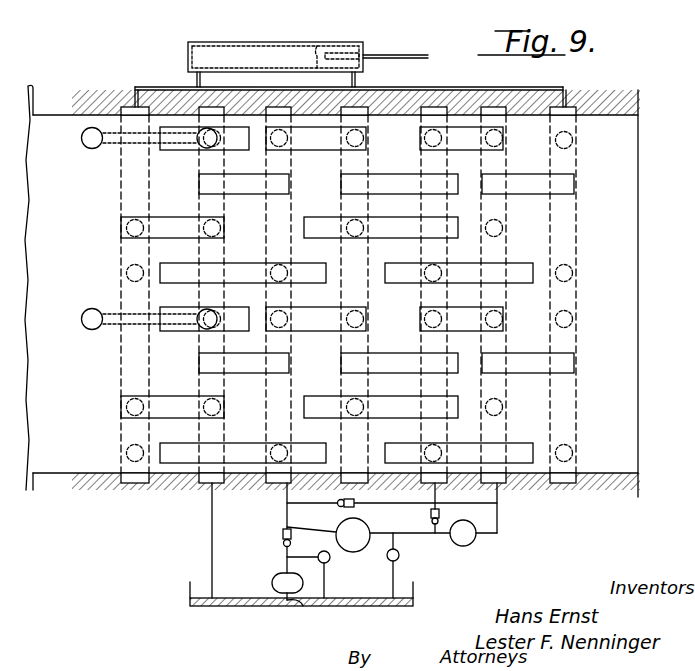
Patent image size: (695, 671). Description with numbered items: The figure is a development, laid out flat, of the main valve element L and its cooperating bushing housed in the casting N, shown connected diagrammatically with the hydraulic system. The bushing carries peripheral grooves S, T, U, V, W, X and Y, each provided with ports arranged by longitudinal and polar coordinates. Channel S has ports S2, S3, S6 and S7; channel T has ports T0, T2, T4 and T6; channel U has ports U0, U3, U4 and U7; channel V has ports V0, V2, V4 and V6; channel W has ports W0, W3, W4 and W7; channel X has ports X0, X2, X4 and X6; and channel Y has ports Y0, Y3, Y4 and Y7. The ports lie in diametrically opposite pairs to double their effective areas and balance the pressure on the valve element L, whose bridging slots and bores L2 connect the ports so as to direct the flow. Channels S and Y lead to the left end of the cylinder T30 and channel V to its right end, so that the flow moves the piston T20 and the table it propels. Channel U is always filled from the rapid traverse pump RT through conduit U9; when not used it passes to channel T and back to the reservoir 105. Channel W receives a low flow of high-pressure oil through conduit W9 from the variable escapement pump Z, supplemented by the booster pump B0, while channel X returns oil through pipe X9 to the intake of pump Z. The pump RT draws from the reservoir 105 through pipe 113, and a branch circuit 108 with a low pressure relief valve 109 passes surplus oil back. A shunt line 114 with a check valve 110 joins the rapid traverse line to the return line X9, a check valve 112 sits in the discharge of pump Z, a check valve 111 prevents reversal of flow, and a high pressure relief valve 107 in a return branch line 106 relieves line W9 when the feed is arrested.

The valve element L is at (628, 182).
The casting N is at (638, 100).
The peripheral groove S is at (127, 107).
The peripheral groove T is at (203, 108).
The peripheral groove U is at (270, 108).
The peripheral groove V is at (345, 108).
The peripheral groove W is at (425, 108).
The peripheral groove X is at (487, 108).
The peripheral groove Y is at (578, 108).
The cylinder T30 is at (200, 43).
The piston T20 is at (317, 46).
The bores L2 is at (110, 150).
The port T0 is at (214, 147).
The port U0 is at (290, 147).
The port V0 is at (366, 138).
The port W0 is at (421, 150).
The port X0 is at (489, 151).
The port Y0 is at (558, 150).
The port S2 is at (121, 229).
The port T2 is at (199, 217).
The port V2 is at (366, 224).
The port X2 is at (488, 223).
The port S3 is at (126, 274).
The port U3 is at (286, 270).
The port W3 is at (426, 267).
The port Y3 is at (574, 273).
The port T4 is at (229, 311).
The port U4 is at (290, 326).
The port V4 is at (368, 311).
The port W4 is at (420, 327).
The port X4 is at (486, 312).
The port Y4 is at (575, 326).
The port S6 is at (124, 407).
The port T6 is at (226, 405).
The port V6 is at (368, 407).
The port X6 is at (485, 403).
The port S7 is at (126, 453).
The port U7 is at (288, 449).
The port W7 is at (427, 448).
The port Y7 is at (575, 450).
The conduit U9 is at (285, 511).
The conduit W9 is at (432, 509).
The pipe X9 is at (499, 517).
The shunt line 114 is at (392, 494).
The check valve 110 is at (339, 507).
The check valve 111 is at (282, 541).
The check valve 112 is at (440, 516).
The booster pump B0 is at (328, 535).
The variable escapement pump Z is at (433, 533).
The low pressure relief valve 109 is at (331, 560).
The branch circuit 108 is at (326, 588).
The high pressure relief valve 107 is at (400, 559).
The return branch line 106 is at (398, 581).
The rapid traverse pump RT is at (272, 583).
The reservoir 105 is at (280, 608).
The pipe 113 is at (308, 612).